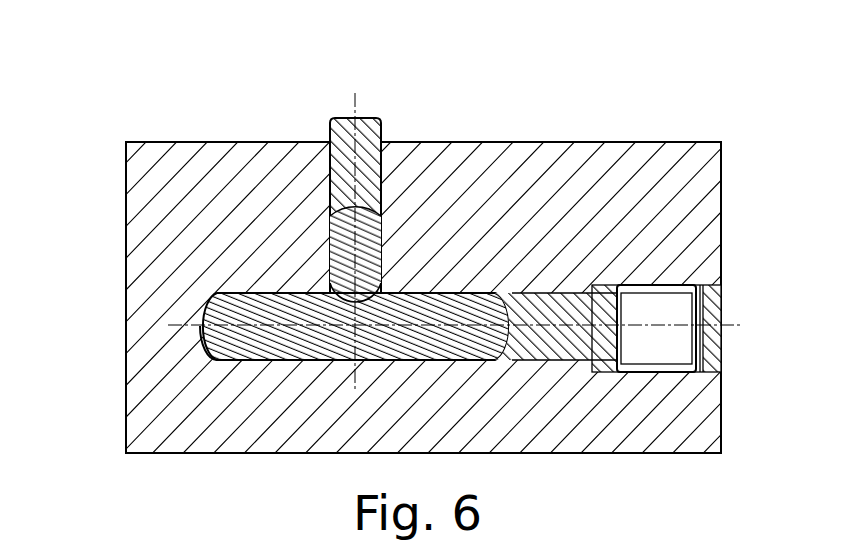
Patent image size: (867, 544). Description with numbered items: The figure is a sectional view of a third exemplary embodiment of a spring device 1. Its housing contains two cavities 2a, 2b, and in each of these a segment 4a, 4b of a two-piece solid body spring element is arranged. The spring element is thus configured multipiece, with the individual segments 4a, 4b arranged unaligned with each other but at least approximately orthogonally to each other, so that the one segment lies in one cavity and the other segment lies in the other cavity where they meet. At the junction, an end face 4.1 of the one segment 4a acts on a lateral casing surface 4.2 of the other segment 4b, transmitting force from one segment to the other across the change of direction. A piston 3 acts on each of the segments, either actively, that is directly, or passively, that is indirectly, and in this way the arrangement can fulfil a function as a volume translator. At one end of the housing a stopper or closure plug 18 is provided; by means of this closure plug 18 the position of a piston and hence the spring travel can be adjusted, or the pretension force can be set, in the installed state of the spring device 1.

The spring device 1 is at (652, 123).
The cavity 2a is at (205, 360).
The cavity 2b is at (321, 246).
The piston 3 is at (378, 117).
The segment 4a is at (243, 317).
The segment 4b is at (330, 236).
The end face 4.1 is at (381, 291).
The lateral casing surface 4.2 is at (248, 292).
The stopper or closure plug 18 is at (723, 309).